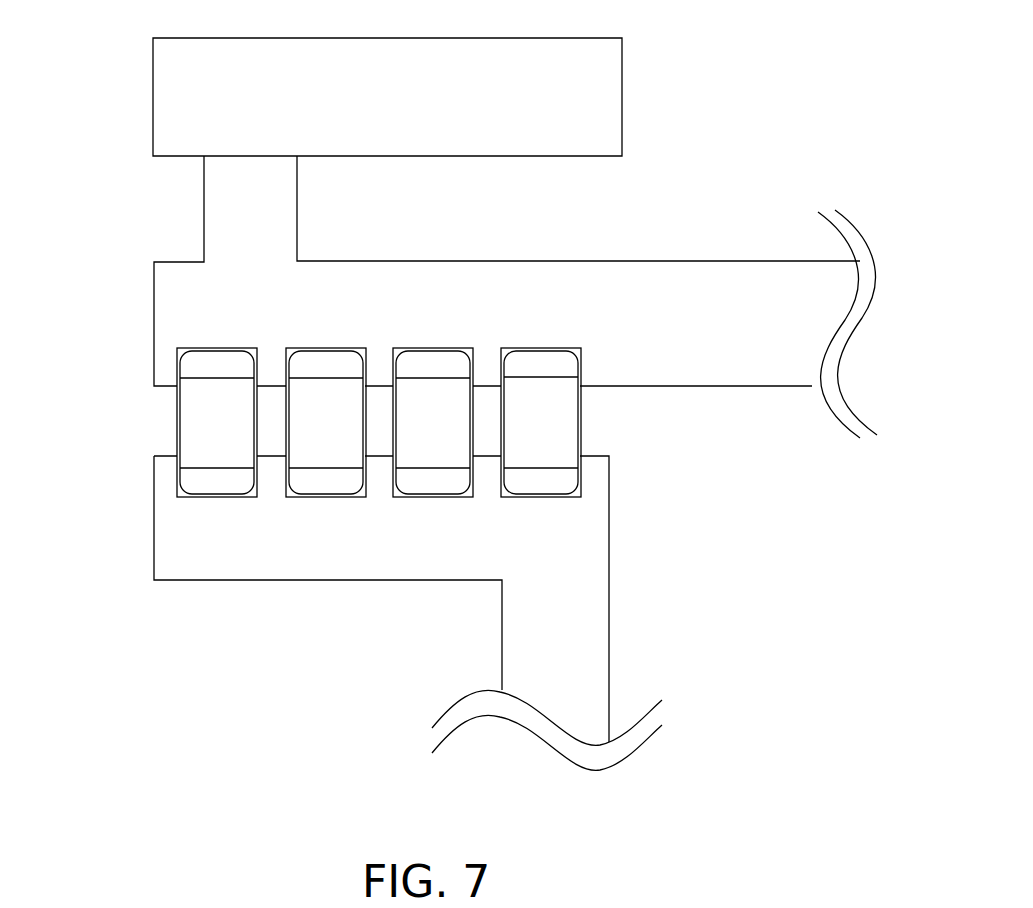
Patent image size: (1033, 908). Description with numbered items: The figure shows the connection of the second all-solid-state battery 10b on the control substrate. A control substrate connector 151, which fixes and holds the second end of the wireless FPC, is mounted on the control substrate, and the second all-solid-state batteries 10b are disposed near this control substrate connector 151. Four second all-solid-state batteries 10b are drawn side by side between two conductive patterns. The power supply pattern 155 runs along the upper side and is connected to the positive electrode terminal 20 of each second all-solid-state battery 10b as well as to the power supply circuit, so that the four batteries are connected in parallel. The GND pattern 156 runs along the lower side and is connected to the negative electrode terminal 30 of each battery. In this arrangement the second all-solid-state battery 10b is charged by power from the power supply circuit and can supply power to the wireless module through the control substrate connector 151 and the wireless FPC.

The control substrate connector 151 is at (602, 82).
The power supply pattern 155 is at (590, 280).
The GND pattern 156 is at (590, 578).
The positive electrode terminal 20 is at (233, 364).
The second all-solid-state battery 10b is at (305, 434).
The negative electrode terminal 30 is at (525, 485).